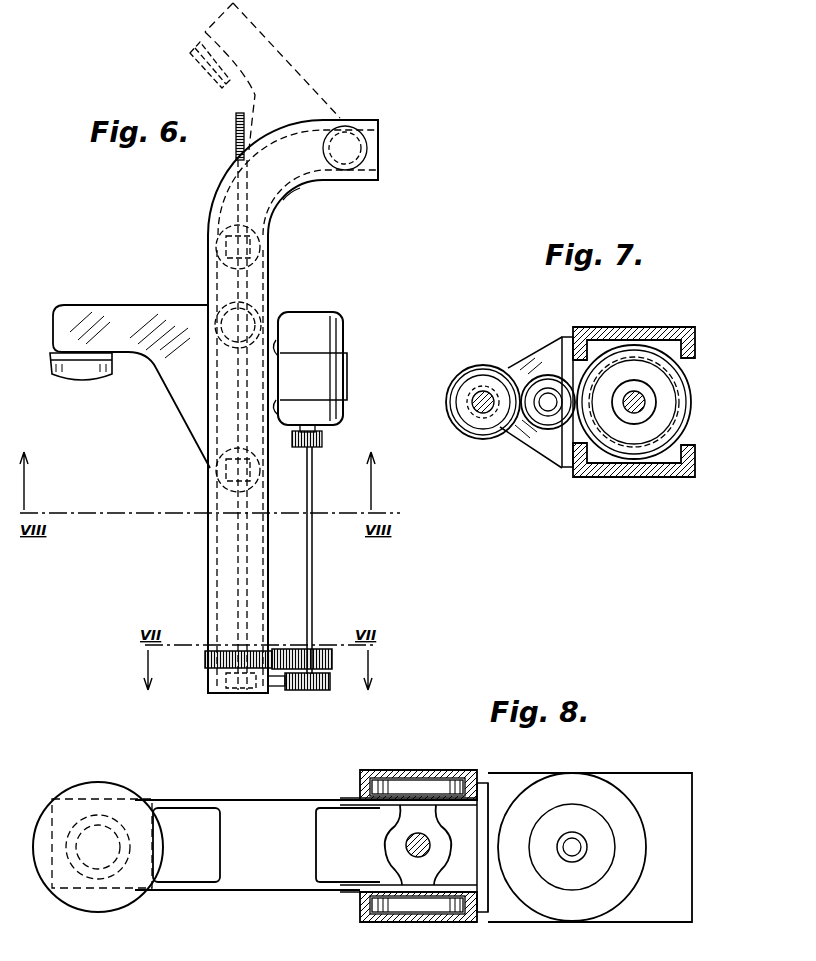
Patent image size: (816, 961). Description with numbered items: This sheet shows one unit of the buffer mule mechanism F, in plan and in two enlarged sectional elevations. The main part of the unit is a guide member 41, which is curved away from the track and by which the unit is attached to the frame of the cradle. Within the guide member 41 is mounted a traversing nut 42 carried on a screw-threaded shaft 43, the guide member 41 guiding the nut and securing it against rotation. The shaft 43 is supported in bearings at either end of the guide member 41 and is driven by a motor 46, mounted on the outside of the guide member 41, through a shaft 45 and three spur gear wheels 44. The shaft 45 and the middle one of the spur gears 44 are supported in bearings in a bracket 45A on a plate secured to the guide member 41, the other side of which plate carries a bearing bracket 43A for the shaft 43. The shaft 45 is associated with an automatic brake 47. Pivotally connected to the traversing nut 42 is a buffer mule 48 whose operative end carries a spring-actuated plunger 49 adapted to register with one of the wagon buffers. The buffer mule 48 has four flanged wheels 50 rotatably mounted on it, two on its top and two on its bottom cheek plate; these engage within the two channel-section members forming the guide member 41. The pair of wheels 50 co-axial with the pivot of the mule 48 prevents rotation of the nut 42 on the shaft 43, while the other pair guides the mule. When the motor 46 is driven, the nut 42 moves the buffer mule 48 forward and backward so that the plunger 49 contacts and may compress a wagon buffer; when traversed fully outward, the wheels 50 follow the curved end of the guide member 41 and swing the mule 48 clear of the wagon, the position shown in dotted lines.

In FIG. 6, the guide member 41 is at (208, 592).
In FIG. 7, the guide member 41 is at (640, 327).
In FIG. 8, the guide member 41 is at (465, 776).
In FIG. 6, the traversing nut 42 is at (260, 485).
In FIG. 8, the traversing nut 42 is at (395, 832).
In FIG. 6, the screw-threaded shaft 43 is at (232, 550).
In FIG. 7, the screw-threaded shaft 43 is at (648, 402).
In FIG. 8, the screw-threaded shaft 43 is at (406, 847).
In FIG. 6, the bearing bracket 43A is at (250, 690).
In FIG. 7, the bearing bracket 43A is at (660, 382).
In FIG. 6, the spur gear wheels 44 is at (225, 645).
In FIG. 7, the spur gear wheels 44 is at (490, 430).
In FIG. 6, the shaft 45 is at (313, 530).
In FIG. 7, the shaft 45 is at (470, 410).
In FIG. 8, the shaft 45 is at (573, 845).
In FIG. 6, the bracket 45A is at (290, 690).
In FIG. 7, the bracket 45A is at (548, 420).
In FIG. 6, the motor 46 is at (343, 372).
In FIG. 8, the motor 46 is at (630, 810).
In FIG. 6, the automatic brake 47 is at (323, 440).
In FIG. 8, the automatic brake 47 is at (576, 880).
In FIG. 6, the buffer mule 48 is at (150, 314).
In FIG. 8, the buffer mule 48 is at (261, 800).
In FIG. 6, the spring-actuated plunger 49 is at (88, 370).
In FIG. 8, the spring-actuated plunger 49 is at (120, 790).
In FIG. 6, the flanged wheels 50 is at (352, 182).
In FIG. 8, the flanged wheels 50 is at (418, 788).
In FIG. 6, the buffer mule mechanism F is at (290, 190).
In FIG. 8, the buffer mule mechanism F is at (642, 775).